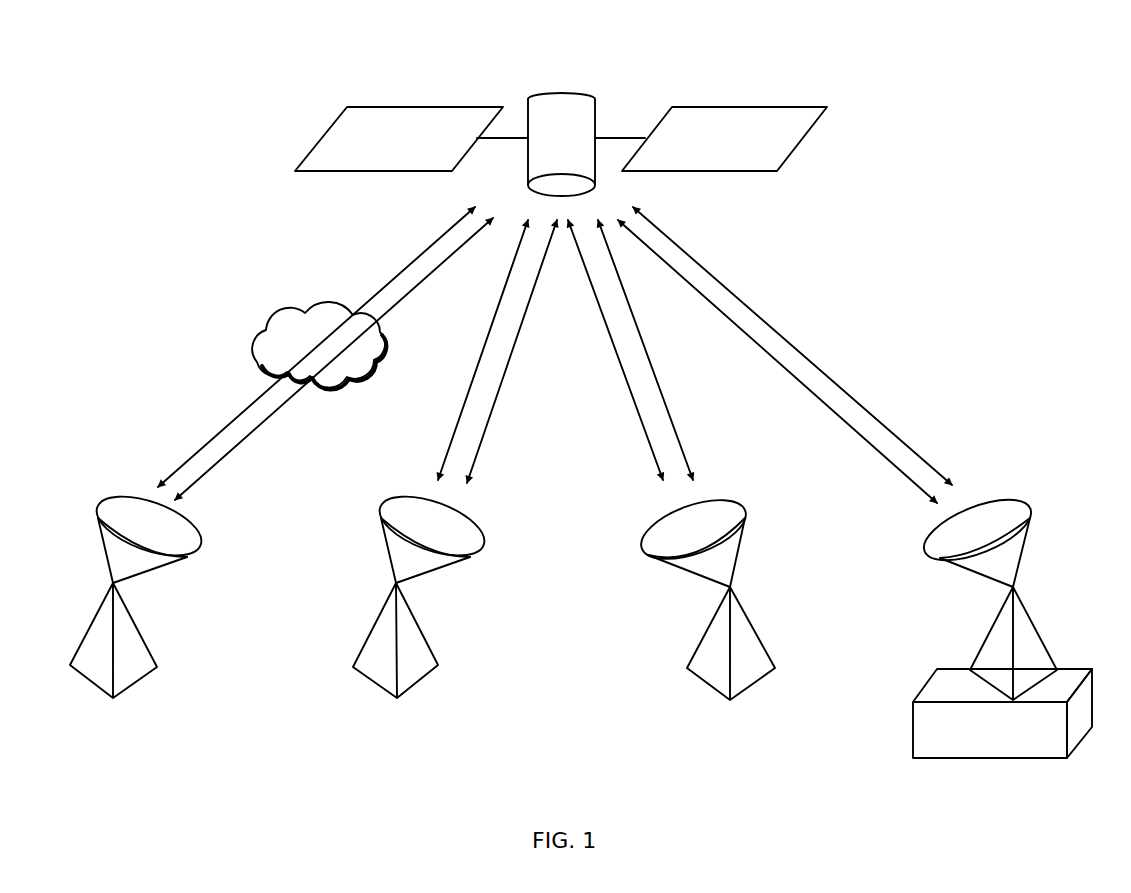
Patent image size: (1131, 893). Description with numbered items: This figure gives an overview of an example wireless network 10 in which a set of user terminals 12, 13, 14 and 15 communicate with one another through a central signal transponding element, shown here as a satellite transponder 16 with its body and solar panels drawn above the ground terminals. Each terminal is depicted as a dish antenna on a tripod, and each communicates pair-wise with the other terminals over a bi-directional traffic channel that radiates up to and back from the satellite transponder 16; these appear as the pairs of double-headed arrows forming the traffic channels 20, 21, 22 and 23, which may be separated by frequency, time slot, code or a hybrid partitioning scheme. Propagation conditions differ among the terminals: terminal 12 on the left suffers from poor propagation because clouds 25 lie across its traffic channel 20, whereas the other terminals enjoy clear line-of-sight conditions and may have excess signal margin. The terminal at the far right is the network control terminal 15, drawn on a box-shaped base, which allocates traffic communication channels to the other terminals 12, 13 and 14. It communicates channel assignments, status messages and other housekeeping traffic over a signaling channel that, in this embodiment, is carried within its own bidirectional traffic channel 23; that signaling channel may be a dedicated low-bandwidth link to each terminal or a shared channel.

The network 10 is at (255, 235).
The terminal 12 is at (130, 677).
The terminal 13 is at (415, 675).
The terminal 14 is at (715, 680).
The network control terminal 15 is at (975, 747).
The satellite transponder 16 is at (588, 97).
The bi-directional traffic channel 20 is at (247, 425).
The bi-directional traffic channel 21 is at (470, 432).
The bi-directional traffic channel 22 is at (633, 362).
The bi-directional traffic channel 23 is at (837, 402).
The clouds 25 is at (293, 308).